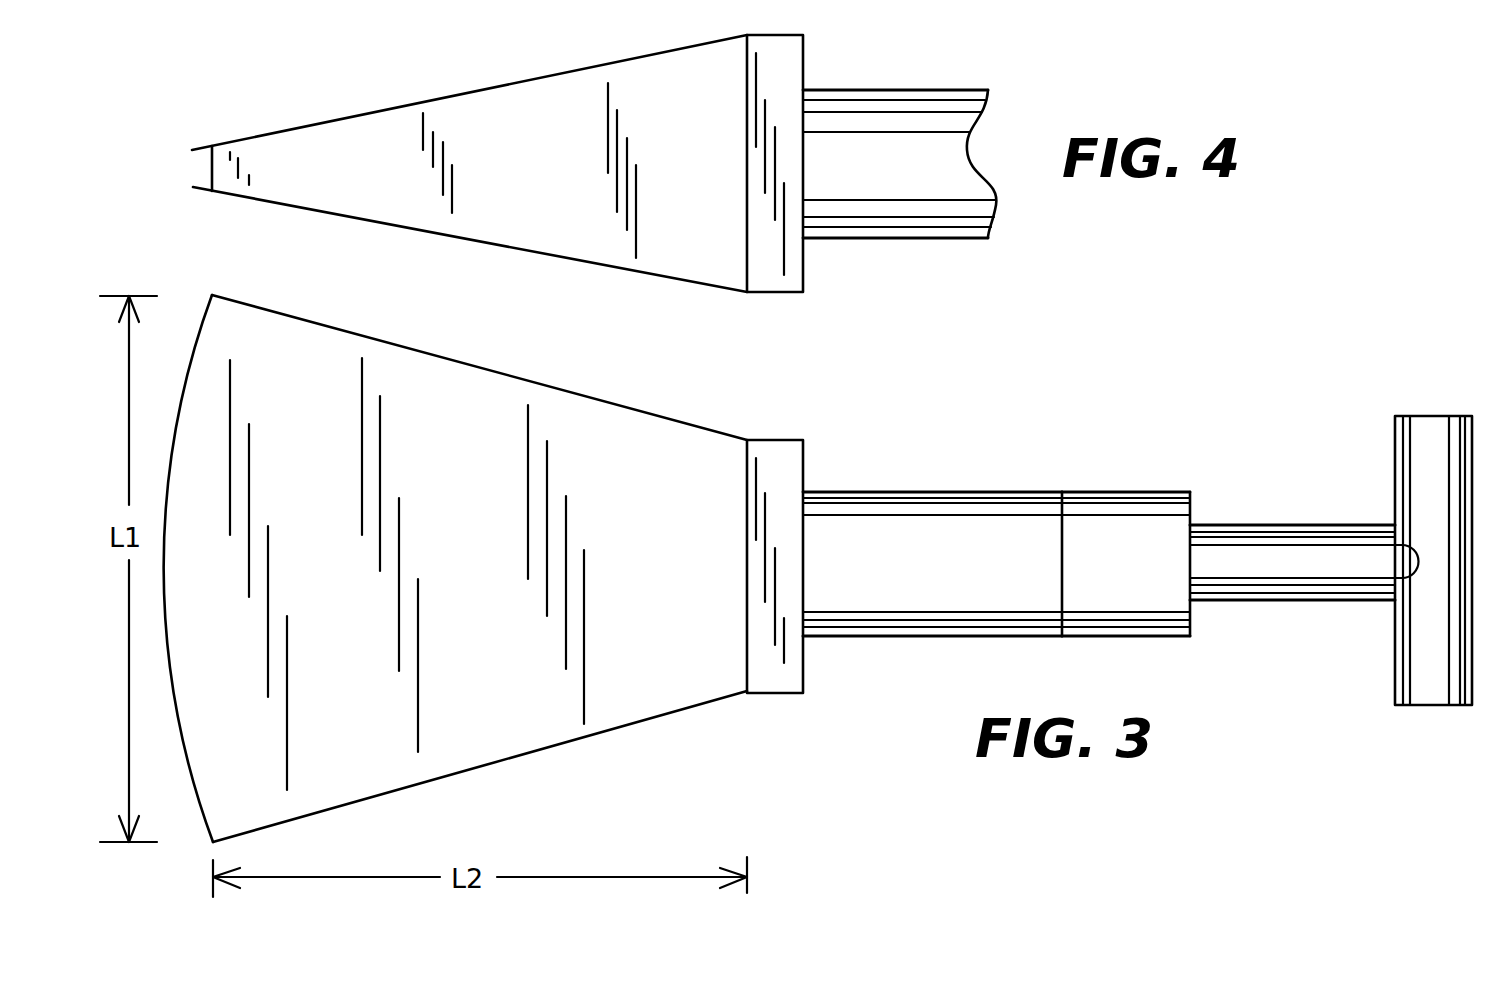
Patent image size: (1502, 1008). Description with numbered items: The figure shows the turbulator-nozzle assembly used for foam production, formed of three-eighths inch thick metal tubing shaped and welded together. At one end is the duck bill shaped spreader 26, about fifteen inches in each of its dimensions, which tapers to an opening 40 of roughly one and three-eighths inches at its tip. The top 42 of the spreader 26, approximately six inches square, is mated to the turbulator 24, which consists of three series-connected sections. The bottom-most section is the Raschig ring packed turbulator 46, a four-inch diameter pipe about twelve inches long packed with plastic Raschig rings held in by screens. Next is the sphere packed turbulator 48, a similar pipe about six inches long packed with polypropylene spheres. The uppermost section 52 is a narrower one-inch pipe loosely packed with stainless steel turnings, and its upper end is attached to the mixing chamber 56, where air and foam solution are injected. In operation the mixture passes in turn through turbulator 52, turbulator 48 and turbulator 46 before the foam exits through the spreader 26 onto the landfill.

In FIG. 4, the turbulator 24 is at (950, 255).
In FIG. 3, the turbulator 24 is at (960, 466).
In FIG. 4, the spreader 26 is at (563, 275).
In FIG. 3, the spreader 26 is at (573, 765).
In FIG. 4, the opening 40 is at (192, 170).
In FIG. 4, the top 42 is at (765, 293).
In FIG. 3, the top 42 is at (778, 440).
In FIG. 4, the Raschig ring packed turbulator 46 is at (848, 155).
In FIG. 3, the Raschig ring packed turbulator 46 is at (923, 590).
In FIG. 3, the sphere packed turbulator 48 is at (1088, 538).
In FIG. 3, the steel turnings packed turbulator 52 is at (1322, 560).
In FIG. 3, the mixing chamber 56 is at (1434, 480).